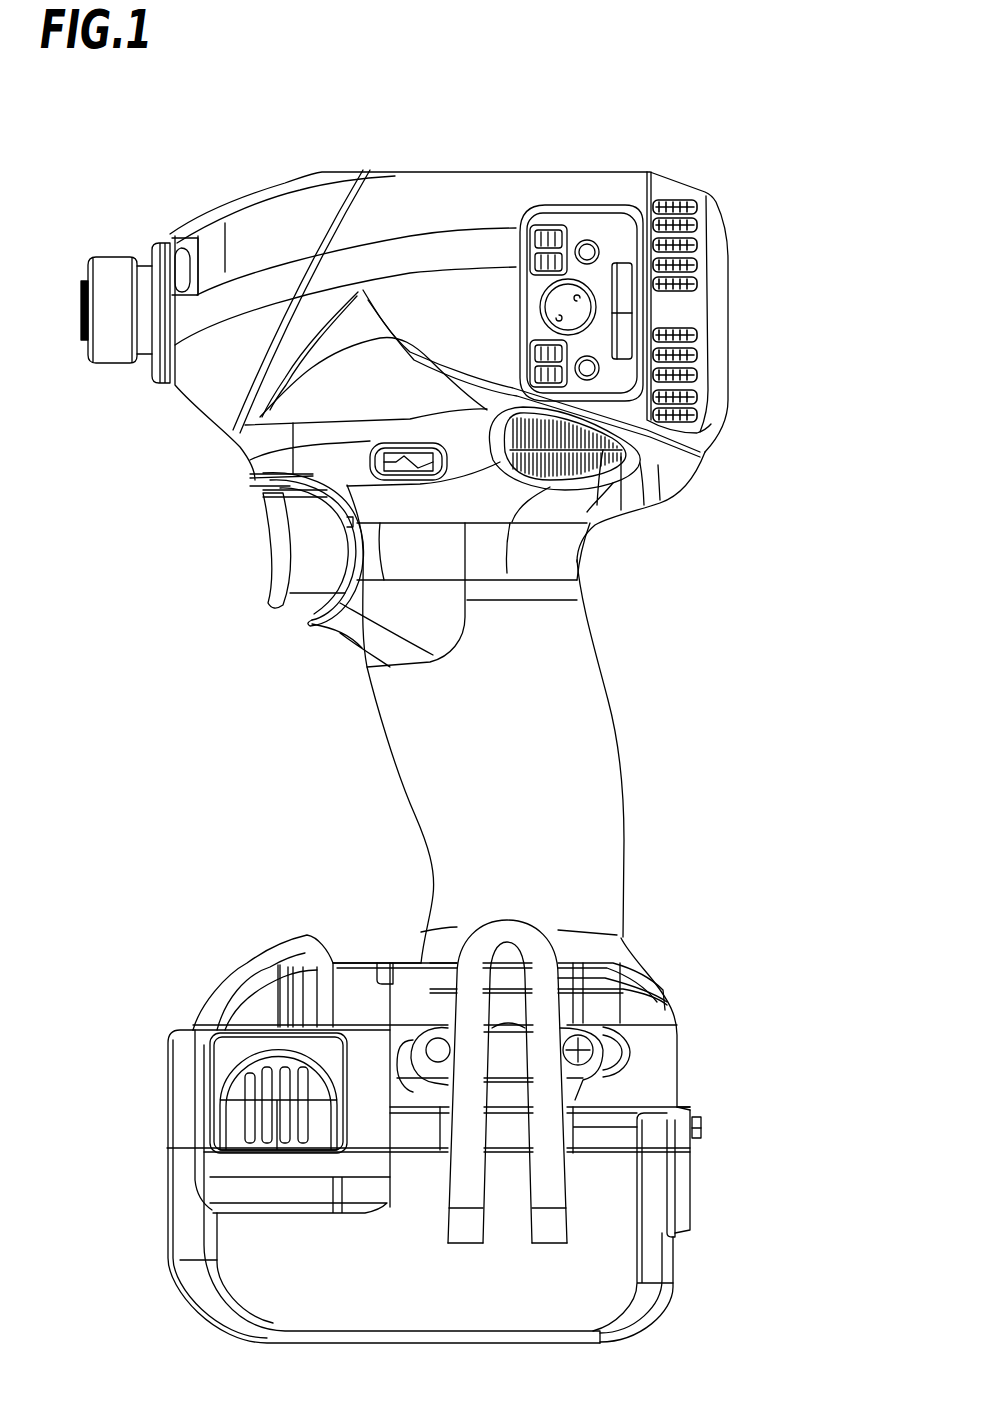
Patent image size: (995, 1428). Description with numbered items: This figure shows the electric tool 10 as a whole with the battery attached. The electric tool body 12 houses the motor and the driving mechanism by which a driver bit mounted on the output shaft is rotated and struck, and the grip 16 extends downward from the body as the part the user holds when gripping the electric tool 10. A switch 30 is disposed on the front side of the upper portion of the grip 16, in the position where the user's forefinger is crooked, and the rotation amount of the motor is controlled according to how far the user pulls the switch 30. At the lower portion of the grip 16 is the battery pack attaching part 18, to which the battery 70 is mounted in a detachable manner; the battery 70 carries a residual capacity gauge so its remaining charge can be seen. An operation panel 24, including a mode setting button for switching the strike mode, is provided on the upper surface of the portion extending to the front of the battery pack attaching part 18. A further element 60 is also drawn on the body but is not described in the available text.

The electric tool 10 is at (596, 120).
The electric tool body 12 is at (443, 178).
The grip 16 is at (607, 762).
The battery pack attaching part 18 is at (660, 980).
The operation panel 24 is at (352, 955).
The switch 30 is at (280, 548).
The forward/reverse switch 60 is at (252, 472).
The battery 70 is at (650, 1190).